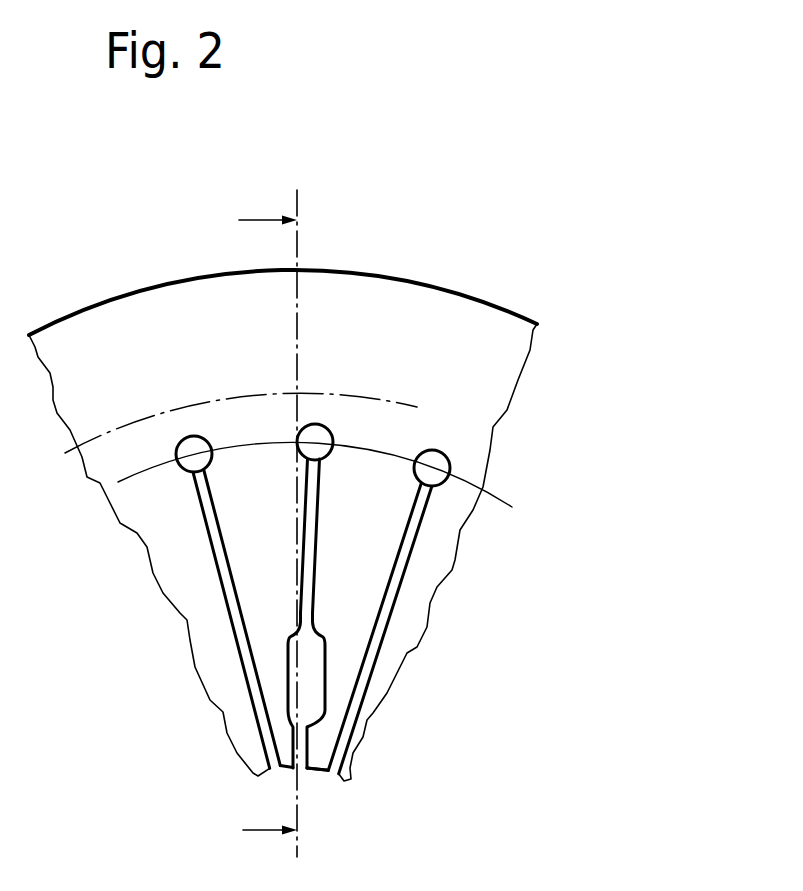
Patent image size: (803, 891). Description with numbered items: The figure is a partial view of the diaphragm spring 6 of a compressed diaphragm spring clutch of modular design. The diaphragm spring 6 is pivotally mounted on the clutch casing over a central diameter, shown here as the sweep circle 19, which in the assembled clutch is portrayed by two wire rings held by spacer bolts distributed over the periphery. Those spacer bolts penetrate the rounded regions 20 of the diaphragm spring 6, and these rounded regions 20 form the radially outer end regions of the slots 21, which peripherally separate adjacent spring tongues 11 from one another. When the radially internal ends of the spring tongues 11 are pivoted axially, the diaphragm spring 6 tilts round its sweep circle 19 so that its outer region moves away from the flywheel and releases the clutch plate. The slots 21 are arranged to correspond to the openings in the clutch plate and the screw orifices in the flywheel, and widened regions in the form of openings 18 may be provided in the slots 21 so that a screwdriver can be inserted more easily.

The diaphragm spring 6 is at (418, 314).
The sweep circle 19 is at (417, 407).
The rounded regions 20 is at (181, 443).
The slots 21 is at (309, 614).
The openings 18 is at (312, 678).
The spring tongues 11 is at (355, 592).